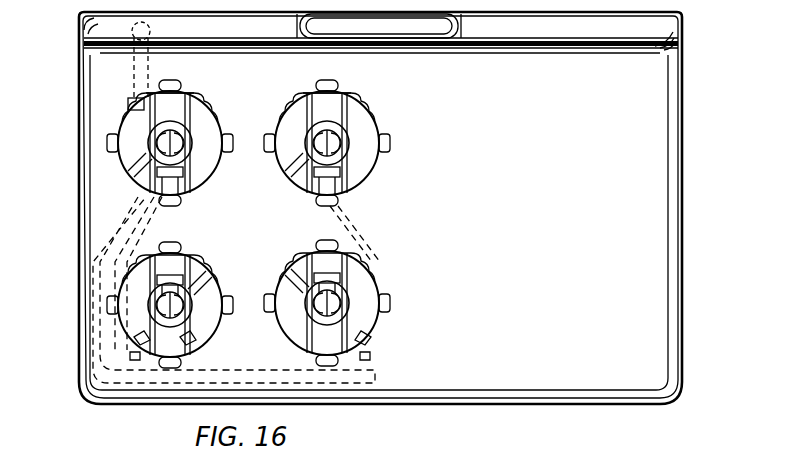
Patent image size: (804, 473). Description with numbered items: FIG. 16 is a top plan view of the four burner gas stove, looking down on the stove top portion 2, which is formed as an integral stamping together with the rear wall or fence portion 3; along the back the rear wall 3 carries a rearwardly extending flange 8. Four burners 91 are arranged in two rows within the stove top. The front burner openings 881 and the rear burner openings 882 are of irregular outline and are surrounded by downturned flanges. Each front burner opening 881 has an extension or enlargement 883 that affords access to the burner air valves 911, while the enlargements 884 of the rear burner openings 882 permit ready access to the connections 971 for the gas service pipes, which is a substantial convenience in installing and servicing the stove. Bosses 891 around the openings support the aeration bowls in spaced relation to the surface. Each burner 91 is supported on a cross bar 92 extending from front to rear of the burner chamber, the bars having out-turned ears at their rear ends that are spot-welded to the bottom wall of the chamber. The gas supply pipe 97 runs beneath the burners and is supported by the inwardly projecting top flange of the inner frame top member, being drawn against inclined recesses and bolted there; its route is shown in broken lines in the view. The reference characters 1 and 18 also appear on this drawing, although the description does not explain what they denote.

The cooktop frame 1 is at (682, 258).
The stove top portion 2 is at (671, 172).
The rear wall or fence portion 3 is at (668, 50).
The rearwardly extending flange 8 is at (672, 22).
The mounting tab 18 is at (113, 150).
The burner 91 is at (187, 152).
The cross bar 92 is at (193, 99).
The gas supply pipe 97 is at (104, 265).
The front burner opening 881 is at (125, 318).
The rear burner opening 882 is at (128, 172).
The extension or enlargement of front burner opening 883 is at (205, 349).
The enlargement of rear burner opening 884 is at (296, 96).
The boss 891 is at (318, 244).
The burner air valve 911 is at (362, 350).
The connection for gas service pipe 971 is at (133, 107).